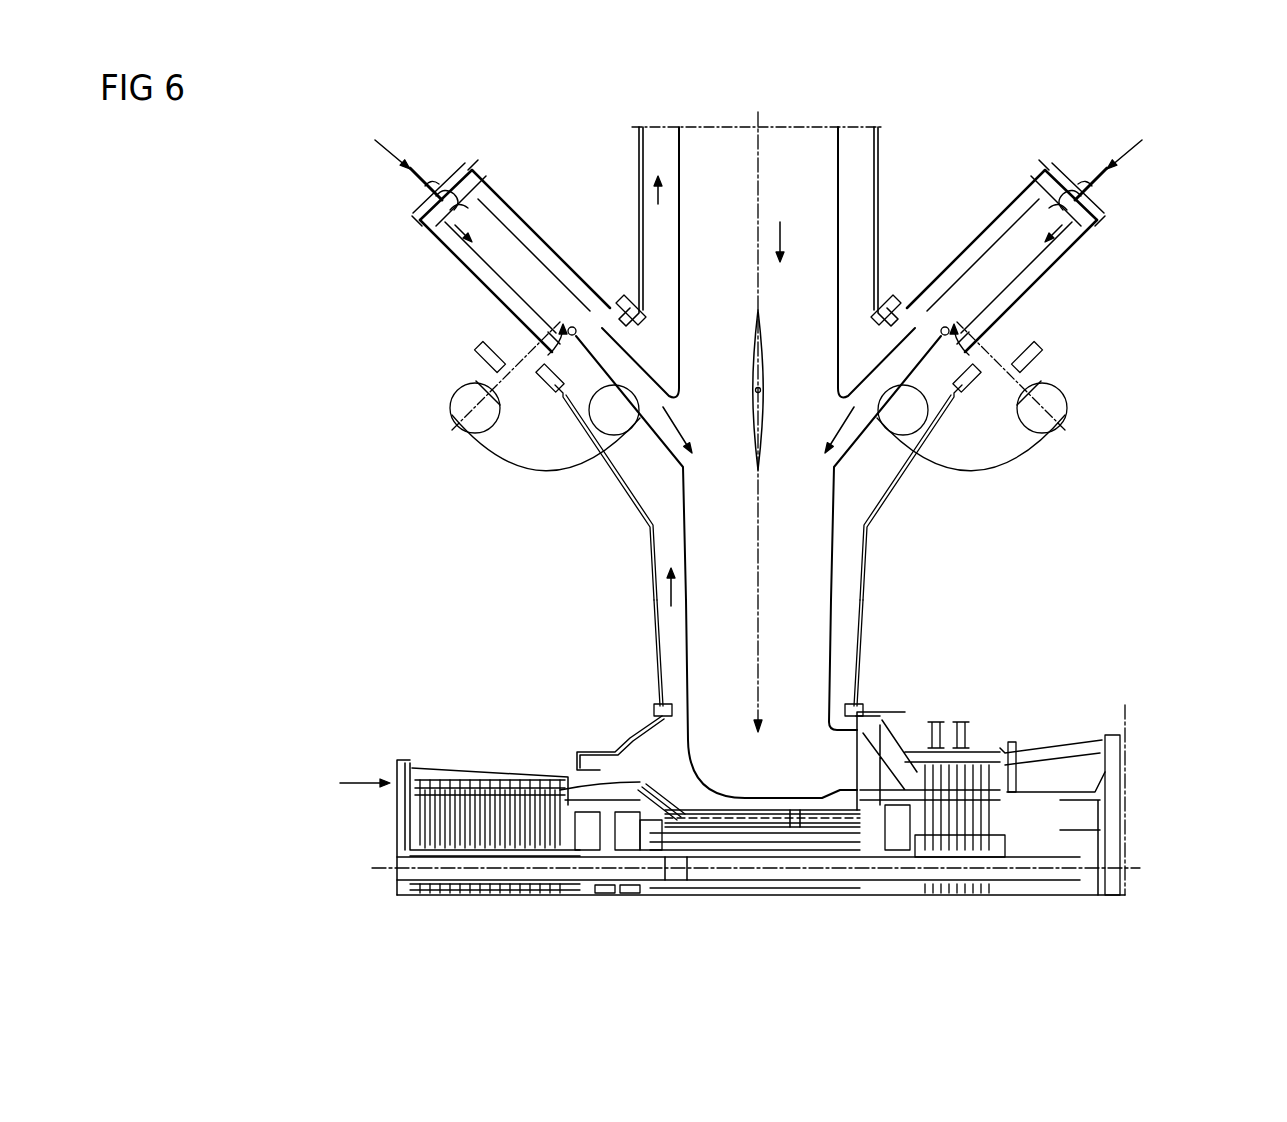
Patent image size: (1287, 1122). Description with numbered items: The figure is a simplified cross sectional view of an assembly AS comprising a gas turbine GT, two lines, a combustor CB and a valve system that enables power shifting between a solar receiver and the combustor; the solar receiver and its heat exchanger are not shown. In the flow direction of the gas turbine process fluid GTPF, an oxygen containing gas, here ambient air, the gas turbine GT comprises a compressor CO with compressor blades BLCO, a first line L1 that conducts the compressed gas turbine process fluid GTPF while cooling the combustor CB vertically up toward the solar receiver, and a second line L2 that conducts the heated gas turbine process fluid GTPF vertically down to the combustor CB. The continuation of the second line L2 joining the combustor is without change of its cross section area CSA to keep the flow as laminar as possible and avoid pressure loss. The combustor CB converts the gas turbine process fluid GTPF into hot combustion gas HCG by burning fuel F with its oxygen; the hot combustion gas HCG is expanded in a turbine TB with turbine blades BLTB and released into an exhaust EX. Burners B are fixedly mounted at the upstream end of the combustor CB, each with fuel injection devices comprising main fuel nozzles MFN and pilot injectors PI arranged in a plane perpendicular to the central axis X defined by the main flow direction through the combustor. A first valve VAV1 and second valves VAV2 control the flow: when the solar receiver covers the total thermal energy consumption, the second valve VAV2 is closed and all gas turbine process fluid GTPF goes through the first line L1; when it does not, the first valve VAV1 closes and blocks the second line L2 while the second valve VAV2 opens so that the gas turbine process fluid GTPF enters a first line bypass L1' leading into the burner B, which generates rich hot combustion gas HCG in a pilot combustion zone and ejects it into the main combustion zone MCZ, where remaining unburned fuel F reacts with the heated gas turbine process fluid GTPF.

The assembly AS is at (1203, 140).
The cross section area CSA is at (836, 118).
The central axis X is at (760, 190).
The first valve VAV1 is at (764, 366).
The second valve VAV2 is at (1037, 366).
The gas turbine process fluid GTPF is at (748, 244).
The hot combustion gas HCG is at (851, 418).
The combustor CB is at (660, 706).
The burner B is at (762, 231).
The main combustion zone MCZ is at (1015, 280).
The main fuel nozzle MFN is at (758, 168).
The pilot injector PI is at (1058, 188).
The fuel F is at (1130, 150).
The first line L1 is at (758, 454).
The second line L2 is at (824, 596).
The first line bypass L1' is at (758, 422).
The gas turbine GT is at (756, 747).
The compressor CO is at (628, 777).
The compressor blades BLCO is at (503, 777).
The turbine TB is at (930, 779).
The turbine blades BLTB is at (953, 724).
The exhaust EX is at (1082, 760).